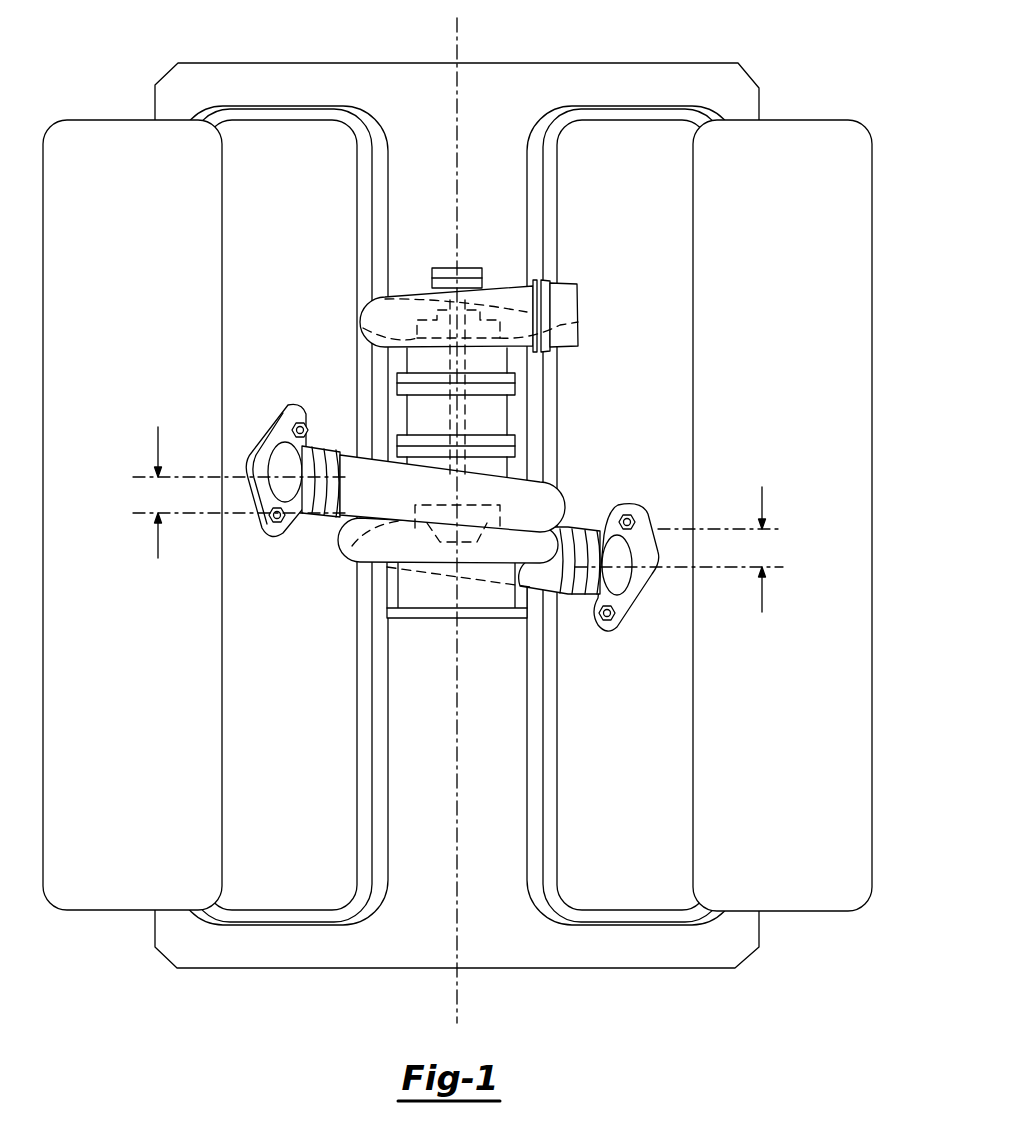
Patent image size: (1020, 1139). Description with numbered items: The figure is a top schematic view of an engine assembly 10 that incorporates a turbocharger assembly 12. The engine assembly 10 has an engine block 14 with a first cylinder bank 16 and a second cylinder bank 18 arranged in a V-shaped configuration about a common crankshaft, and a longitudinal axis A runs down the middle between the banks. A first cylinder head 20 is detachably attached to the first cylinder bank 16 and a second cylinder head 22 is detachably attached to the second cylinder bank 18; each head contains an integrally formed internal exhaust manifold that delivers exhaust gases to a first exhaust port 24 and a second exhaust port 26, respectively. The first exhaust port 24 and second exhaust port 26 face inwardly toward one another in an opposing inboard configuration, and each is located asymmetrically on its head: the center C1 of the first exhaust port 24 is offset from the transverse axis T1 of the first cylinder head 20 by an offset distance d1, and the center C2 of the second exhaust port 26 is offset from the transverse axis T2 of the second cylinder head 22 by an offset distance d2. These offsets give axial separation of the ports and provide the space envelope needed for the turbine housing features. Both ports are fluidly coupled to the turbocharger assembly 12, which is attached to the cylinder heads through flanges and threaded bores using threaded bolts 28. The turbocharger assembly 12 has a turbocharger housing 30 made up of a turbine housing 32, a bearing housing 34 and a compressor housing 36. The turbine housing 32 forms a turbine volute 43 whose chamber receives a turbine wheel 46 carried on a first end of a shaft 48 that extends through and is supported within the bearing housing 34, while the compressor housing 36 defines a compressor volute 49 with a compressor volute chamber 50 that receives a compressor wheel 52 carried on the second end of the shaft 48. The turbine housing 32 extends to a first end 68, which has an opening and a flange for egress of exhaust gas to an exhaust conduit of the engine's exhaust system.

The engine assembly 10 is at (475, 514).
The turbocharger assembly 12 is at (473, 437).
The engine block 14 is at (323, 60).
The first cylinder bank 16 is at (235, 100).
The second cylinder bank 18 is at (665, 100).
The first cylinder head 20 is at (97, 117).
The second cylinder head 22 is at (823, 117).
The first exhaust port 24 is at (282, 452).
The second exhaust port 26 is at (618, 607).
The threaded bolts 28 is at (310, 430).
The turbocharger housing 30 is at (524, 415).
The turbine housing 32 is at (508, 469).
The bearing housing 34 is at (516, 423).
The compressor housing 36 is at (516, 366).
The turbine volute 43 is at (335, 536).
The turbine wheel 46 is at (352, 546).
The shaft 48 is at (448, 412).
The compressor volute 49 is at (368, 295).
The compressor volute chamber 50 is at (580, 317).
The compressor wheel 52 is at (360, 320).
The first end 68 is at (489, 628).
The axis A is at (462, 25).
The center of first exhaust port C1 is at (223, 477).
The transverse axis of first cylinder head T1 is at (223, 513).
The first offset distance d1 is at (158, 481).
The center of second exhaust port C2 is at (694, 567).
The transverse axis of second cylinder head T2 is at (735, 529).
The second offset distance d2 is at (762, 537).